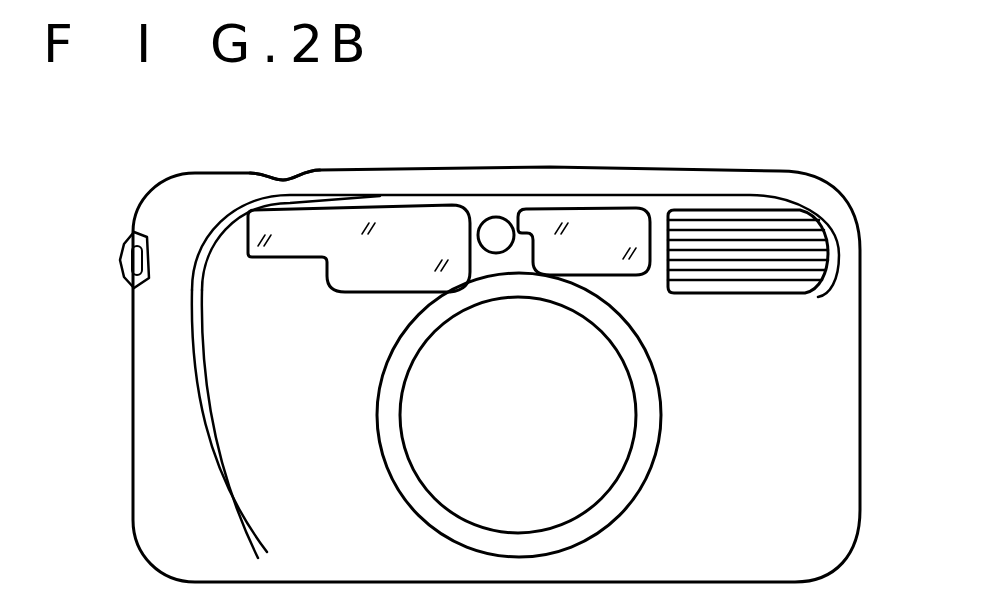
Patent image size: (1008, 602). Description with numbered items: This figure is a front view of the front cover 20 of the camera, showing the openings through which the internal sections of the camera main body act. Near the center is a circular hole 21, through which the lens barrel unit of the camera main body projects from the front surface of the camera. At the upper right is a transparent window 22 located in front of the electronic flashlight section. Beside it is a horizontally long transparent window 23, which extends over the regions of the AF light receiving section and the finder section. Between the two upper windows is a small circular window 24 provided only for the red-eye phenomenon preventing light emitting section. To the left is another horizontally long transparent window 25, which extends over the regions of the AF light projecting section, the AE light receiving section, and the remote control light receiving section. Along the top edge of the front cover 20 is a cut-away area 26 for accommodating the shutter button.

The front cover 20 is at (835, 445).
The circular hole 21 is at (490, 423).
The transparent window 22 is at (740, 222).
The horizontally long transparent window 23 is at (590, 225).
The small circular window 24 is at (492, 228).
The horizontally long transparent window 25 is at (395, 237).
The cut-away area 26 is at (283, 178).